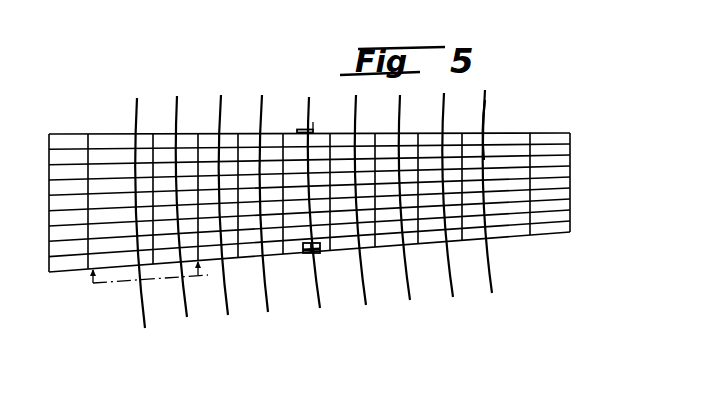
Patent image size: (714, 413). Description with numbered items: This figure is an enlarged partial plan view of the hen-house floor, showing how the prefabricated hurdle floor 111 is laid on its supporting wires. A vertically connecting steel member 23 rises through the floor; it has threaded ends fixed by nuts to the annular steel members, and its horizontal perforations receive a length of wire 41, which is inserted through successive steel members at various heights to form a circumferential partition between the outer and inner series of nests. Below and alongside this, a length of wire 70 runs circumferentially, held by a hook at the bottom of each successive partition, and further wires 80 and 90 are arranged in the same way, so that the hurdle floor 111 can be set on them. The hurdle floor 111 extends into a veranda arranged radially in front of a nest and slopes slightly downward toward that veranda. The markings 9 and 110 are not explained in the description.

The spacing between supports 9 is at (94, 284).
The vertically connecting steel member 23 is at (313, 131).
The wire 41 is at (310, 273).
The wire 70 is at (145, 292).
The wire 80 is at (223, 275).
The wire 90 is at (402, 260).
The curved support member 110 is at (483, 273).
The hurdle floor 111 is at (488, 132).